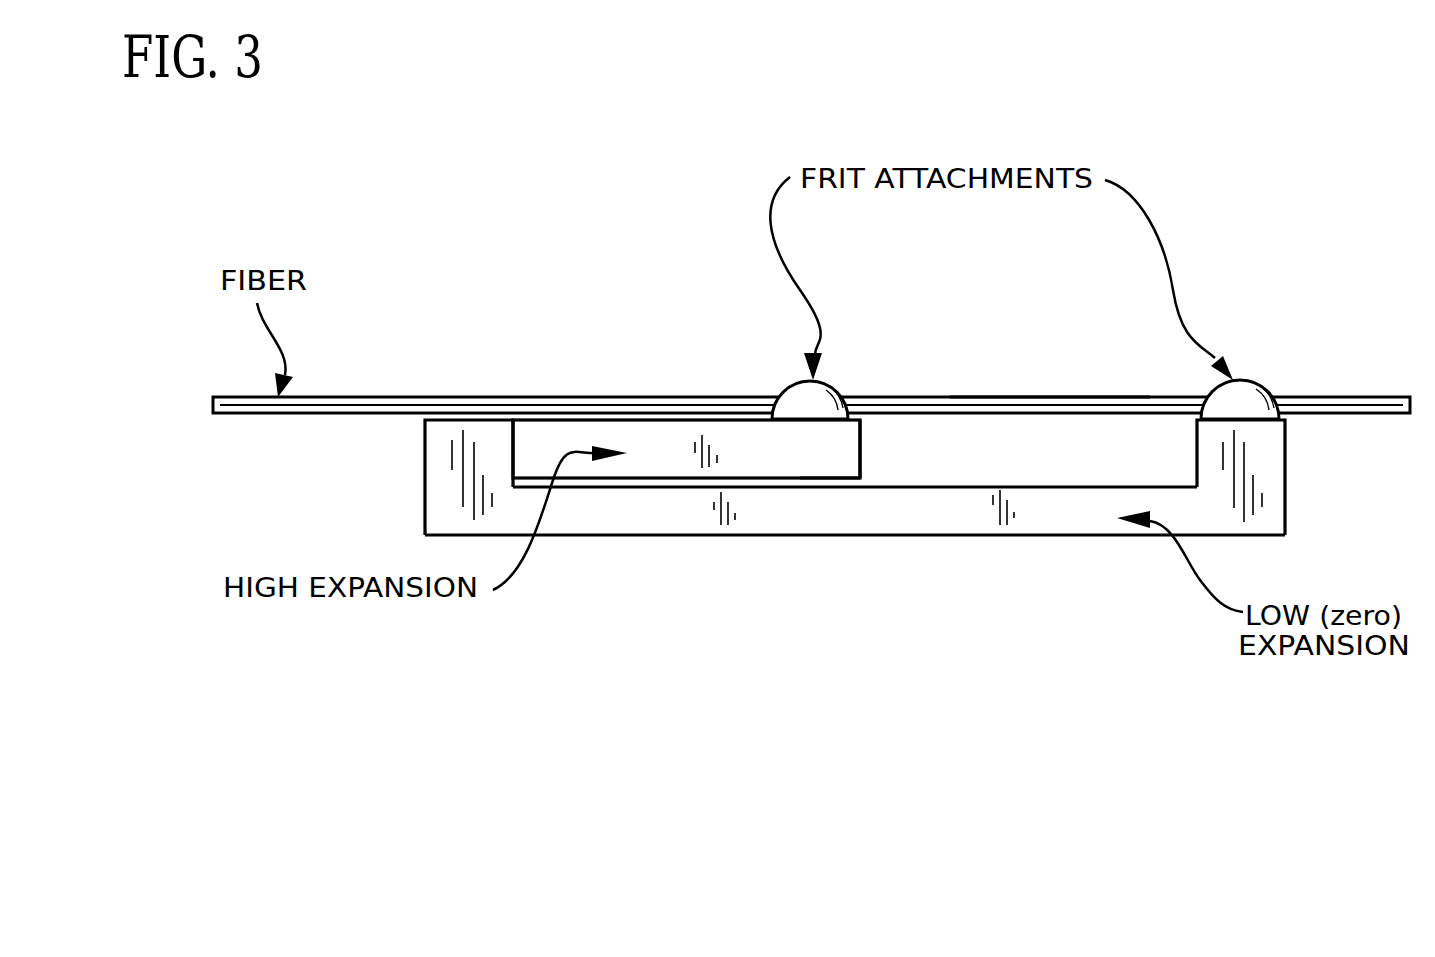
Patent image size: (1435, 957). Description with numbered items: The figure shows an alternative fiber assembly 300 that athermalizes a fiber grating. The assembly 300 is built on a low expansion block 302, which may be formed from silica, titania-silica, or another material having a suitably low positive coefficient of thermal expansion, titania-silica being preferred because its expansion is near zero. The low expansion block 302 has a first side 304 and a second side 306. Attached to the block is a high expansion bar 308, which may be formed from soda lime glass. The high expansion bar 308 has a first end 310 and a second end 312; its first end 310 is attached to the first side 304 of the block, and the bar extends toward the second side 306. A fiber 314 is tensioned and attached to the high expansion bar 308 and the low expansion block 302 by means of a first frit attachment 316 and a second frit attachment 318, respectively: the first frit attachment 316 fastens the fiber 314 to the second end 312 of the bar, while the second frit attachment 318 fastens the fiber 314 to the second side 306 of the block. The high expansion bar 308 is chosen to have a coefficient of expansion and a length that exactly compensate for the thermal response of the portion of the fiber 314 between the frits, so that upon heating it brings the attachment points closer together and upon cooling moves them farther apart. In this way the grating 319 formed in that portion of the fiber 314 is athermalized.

The fiber assembly 300 is at (965, 752).
The low expansion block 302 is at (647, 535).
The first side 304 is at (425, 463).
The second side 306 is at (1285, 503).
The high expansion bar 308 is at (852, 462).
The first end 310 is at (550, 435).
The second end 312 is at (863, 432).
The fiber 314 is at (423, 397).
The first frit attachment 316 is at (800, 380).
The second frit attachment 318 is at (1252, 382).
The grating 319 is at (1036, 397).